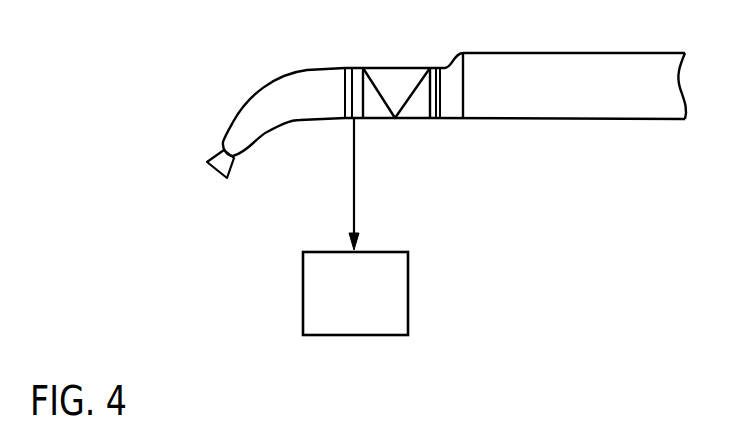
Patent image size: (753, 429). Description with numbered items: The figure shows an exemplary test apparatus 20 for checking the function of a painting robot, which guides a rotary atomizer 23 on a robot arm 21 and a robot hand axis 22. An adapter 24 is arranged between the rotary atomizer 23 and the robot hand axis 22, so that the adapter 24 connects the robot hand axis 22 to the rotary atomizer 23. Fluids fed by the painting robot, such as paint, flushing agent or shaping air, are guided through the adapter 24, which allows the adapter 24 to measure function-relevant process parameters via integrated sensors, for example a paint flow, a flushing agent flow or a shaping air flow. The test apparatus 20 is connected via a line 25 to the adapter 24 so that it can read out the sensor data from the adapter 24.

The test apparatus 20 is at (408, 292).
The robot arm 21 is at (577, 53).
The robot hand axis 22 is at (412, 120).
The rotary atomizer 23 is at (255, 88).
The adapter 24 is at (360, 68).
The line 25 is at (352, 170).